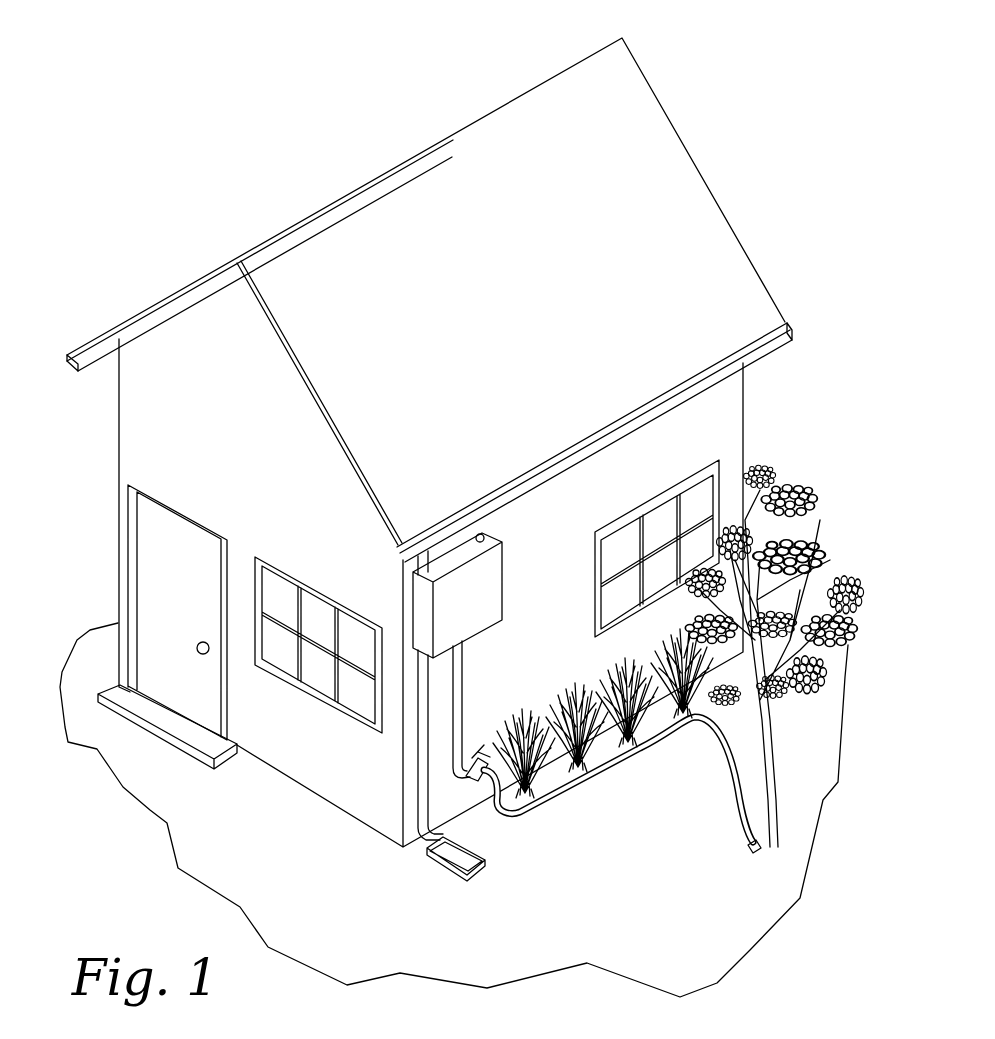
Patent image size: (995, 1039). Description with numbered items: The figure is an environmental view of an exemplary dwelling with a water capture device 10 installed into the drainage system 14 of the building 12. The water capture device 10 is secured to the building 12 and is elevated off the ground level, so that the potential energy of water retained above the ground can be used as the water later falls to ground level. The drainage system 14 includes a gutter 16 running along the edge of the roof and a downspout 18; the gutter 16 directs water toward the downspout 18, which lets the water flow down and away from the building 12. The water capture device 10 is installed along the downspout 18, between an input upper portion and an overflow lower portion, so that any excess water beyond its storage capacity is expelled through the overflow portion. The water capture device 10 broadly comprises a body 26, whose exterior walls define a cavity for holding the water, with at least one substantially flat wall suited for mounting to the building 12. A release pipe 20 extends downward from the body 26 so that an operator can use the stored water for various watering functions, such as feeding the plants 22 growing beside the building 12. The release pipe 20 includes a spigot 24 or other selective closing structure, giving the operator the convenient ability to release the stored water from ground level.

The water capture device 10 is at (484, 575).
The building 12 is at (650, 127).
The drainage system 14 is at (77, 326).
The gutter 16 is at (73, 370).
The downspout 18 is at (417, 562).
The release pipe 20 is at (460, 666).
The plants 22 is at (828, 494).
The spigot 24 is at (476, 736).
The body 26 is at (503, 588).